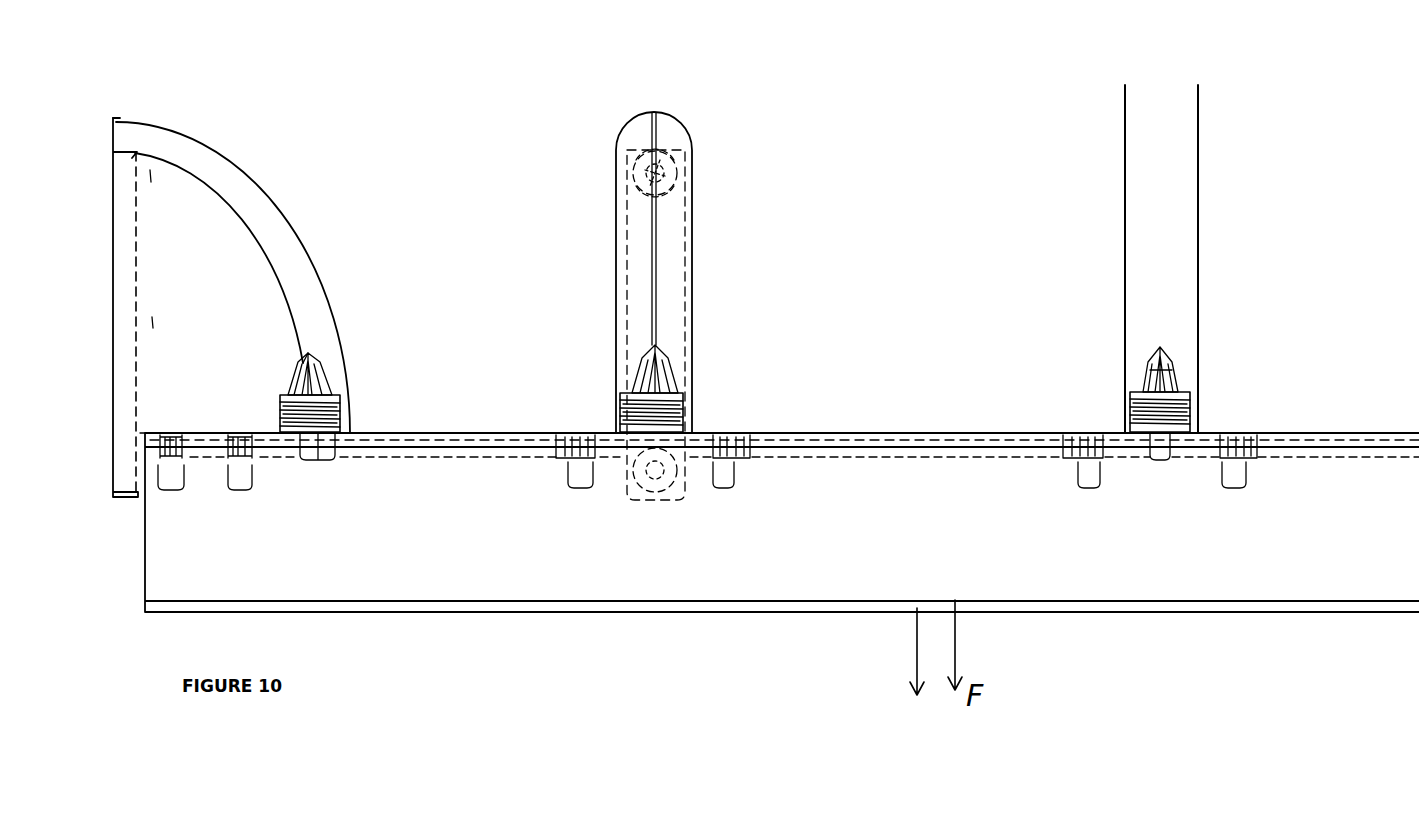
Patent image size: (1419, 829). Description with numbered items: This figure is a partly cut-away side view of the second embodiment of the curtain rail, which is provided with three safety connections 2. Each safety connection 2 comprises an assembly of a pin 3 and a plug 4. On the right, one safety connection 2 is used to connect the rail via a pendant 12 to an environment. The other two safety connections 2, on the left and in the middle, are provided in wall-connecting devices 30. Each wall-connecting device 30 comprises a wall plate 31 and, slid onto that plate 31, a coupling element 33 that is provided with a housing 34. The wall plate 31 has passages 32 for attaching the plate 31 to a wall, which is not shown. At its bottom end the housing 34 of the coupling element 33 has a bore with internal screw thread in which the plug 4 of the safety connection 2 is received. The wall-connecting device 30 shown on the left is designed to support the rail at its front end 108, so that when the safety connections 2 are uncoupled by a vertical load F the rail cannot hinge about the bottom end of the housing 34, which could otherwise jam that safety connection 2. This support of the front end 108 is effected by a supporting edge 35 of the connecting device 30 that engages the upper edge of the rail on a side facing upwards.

The safety connection 2 is at (336, 378).
The pin 3 is at (304, 365).
The plug 4 is at (290, 395).
The pendant 12 is at (1175, 203).
The wall-connecting device 30 is at (227, 132).
The wall plate 31 is at (118, 332).
The passage 32 is at (642, 173).
The coupling element 33 is at (688, 185).
The housing 34 is at (700, 175).
The supporting edge 35 is at (156, 420).
The front end 108 is at (142, 546).